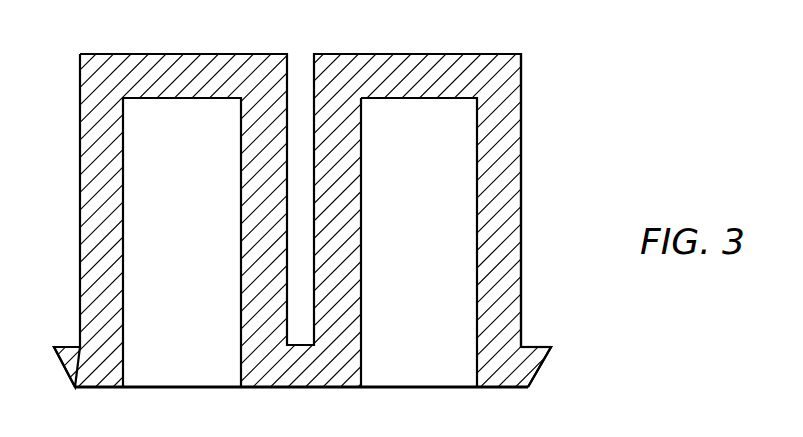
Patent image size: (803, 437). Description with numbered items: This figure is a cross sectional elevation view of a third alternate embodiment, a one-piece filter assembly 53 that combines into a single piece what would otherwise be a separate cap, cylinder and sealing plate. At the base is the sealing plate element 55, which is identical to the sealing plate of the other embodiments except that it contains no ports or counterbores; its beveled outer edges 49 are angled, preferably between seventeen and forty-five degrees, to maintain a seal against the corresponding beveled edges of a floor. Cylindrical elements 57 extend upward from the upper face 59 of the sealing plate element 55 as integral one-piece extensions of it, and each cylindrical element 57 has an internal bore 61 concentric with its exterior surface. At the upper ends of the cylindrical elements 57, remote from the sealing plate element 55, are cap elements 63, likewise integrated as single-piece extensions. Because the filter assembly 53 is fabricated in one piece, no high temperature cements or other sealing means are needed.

The filter assembly 53 is at (557, 148).
The cap elements 63 is at (197, 54).
The cylindrical elements 57 is at (80, 262).
The internal bores 61 is at (125, 365).
The upper face 59 is at (533, 344).
The sealing plate element 55 is at (560, 340).
The beveled outer edges 49 is at (538, 366).